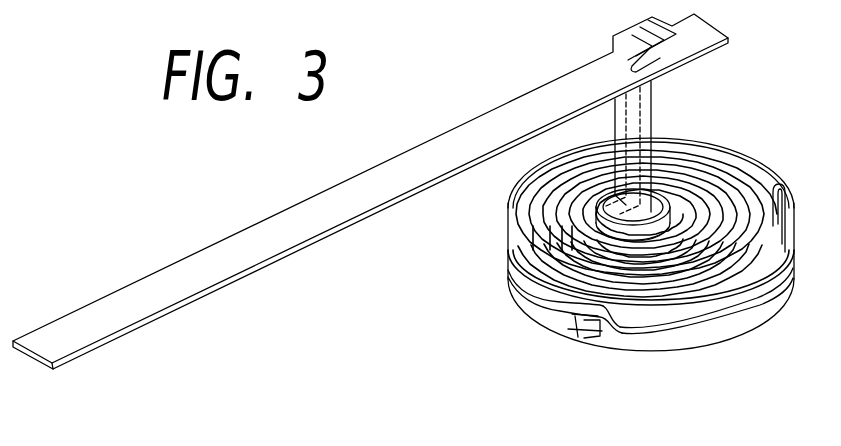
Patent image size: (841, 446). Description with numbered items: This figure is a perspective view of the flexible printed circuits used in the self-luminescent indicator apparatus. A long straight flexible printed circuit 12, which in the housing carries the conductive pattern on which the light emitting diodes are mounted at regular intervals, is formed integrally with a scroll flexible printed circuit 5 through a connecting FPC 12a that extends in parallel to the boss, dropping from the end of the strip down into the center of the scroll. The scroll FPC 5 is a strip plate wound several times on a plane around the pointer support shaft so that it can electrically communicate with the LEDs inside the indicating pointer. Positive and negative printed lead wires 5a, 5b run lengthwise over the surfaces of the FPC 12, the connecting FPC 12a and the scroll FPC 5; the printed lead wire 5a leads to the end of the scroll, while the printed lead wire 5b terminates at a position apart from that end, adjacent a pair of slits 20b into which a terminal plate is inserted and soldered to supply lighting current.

The flexible printed circuit 12 is at (363, 200).
The connecting FPC 12a is at (652, 126).
The flexible printed circuit (scroll FPC) 5 is at (794, 204).
The printed lead wire 5a is at (730, 313).
The printed lead wire 5b is at (546, 312).
The slits 20b is at (575, 320).